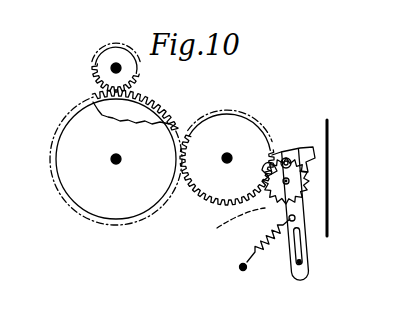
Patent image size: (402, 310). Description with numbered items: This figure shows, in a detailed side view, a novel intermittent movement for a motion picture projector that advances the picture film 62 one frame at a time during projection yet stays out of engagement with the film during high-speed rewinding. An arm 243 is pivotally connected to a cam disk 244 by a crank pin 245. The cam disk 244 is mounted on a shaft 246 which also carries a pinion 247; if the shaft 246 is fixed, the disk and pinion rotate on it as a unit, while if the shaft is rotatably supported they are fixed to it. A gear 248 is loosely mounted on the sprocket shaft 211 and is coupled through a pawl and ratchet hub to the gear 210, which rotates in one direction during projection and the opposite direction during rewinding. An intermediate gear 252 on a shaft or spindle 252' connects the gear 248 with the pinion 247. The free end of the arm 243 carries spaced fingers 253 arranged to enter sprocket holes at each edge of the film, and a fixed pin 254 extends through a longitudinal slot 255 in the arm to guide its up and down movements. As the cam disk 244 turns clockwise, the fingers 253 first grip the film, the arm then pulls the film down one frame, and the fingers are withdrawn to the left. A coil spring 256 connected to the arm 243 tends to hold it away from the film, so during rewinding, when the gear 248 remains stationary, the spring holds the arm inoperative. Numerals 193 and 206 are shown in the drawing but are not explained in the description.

The shaft 193 is at (111, 67).
The pinion gear 206 is at (134, 76).
The gear 210 is at (115, 106).
The sprocket shaft 211 is at (115, 153).
The gear 248 is at (156, 140).
The shaft or spindle 252' is at (227, 141).
The intermediate gear 252 is at (218, 173).
The crank pin 245 is at (285, 157).
The cam disk 244 is at (270, 168).
The shaft 246 is at (290, 181).
The spaced fingers 253 is at (310, 160).
The arm 243 is at (305, 213).
The longitudinal slot 255 is at (303, 233).
The fixed pin 254 is at (307, 247).
The pinion 247 is at (258, 246).
The coil spring 256 is at (250, 254).
The picture film 62 is at (329, 129).